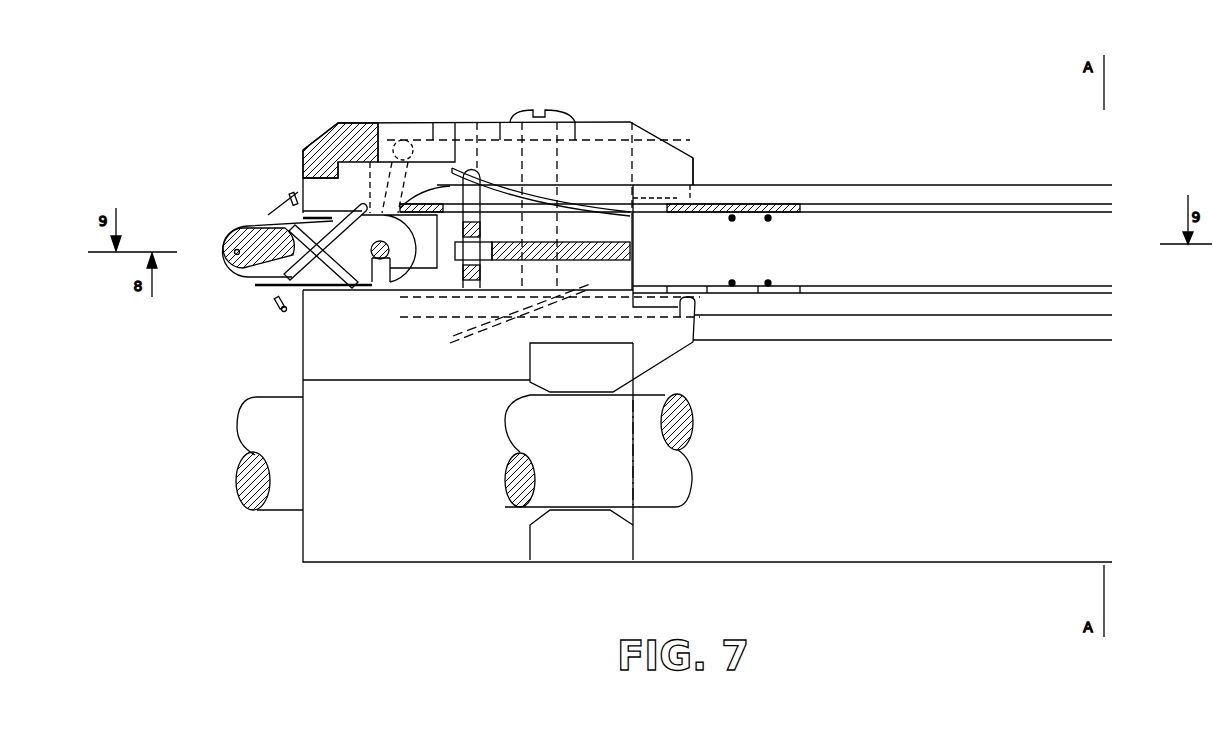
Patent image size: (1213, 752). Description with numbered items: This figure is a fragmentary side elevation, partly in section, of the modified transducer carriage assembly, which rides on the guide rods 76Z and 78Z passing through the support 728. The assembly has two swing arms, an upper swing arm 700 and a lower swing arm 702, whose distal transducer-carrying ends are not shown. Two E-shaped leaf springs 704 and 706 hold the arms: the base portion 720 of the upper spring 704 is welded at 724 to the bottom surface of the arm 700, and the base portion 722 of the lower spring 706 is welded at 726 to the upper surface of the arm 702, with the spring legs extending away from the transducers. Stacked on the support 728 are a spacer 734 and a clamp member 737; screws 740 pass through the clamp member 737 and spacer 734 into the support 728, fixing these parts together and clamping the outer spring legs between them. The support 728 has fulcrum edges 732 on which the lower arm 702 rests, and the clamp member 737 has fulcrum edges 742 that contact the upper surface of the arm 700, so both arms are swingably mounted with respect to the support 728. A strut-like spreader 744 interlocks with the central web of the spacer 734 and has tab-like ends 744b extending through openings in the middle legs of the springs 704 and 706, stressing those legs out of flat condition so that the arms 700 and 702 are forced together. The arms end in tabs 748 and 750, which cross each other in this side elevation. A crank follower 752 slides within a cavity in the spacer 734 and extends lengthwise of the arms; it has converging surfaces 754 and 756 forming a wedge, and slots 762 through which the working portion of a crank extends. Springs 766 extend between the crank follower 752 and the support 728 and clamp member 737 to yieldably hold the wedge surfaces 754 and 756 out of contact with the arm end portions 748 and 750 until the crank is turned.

The swing arm 700 is at (885, 184).
The swing arm 702 is at (885, 341).
The E-shaped leaf spring 704 is at (563, 207).
The E-shaped leaf spring 706 is at (507, 325).
The base portion 720 is at (770, 221).
The base portion 722 is at (770, 282).
The weld 724 is at (730, 221).
The weld 726 is at (730, 282).
The support 728 is at (428, 563).
The fulcrum edges 732 is at (683, 298).
The spacer 734 is at (443, 237).
The clamp member 737 is at (600, 122).
The screws 740 is at (544, 112).
The fulcrum edges 742 is at (700, 170).
The strut-like spreader 744 is at (463, 270).
The tab-like ends 744b is at (475, 168).
The end portion 748 is at (283, 277).
The end portion 750 is at (295, 228).
The crank follower 752 is at (247, 226).
The wedge surface 754 is at (240, 232).
The wedge surface 756 is at (240, 282).
The slots 762 is at (380, 283).
The springs 766 is at (280, 313).
The guide rod 76Z is at (237, 431).
The guide rod 78Z is at (692, 476).